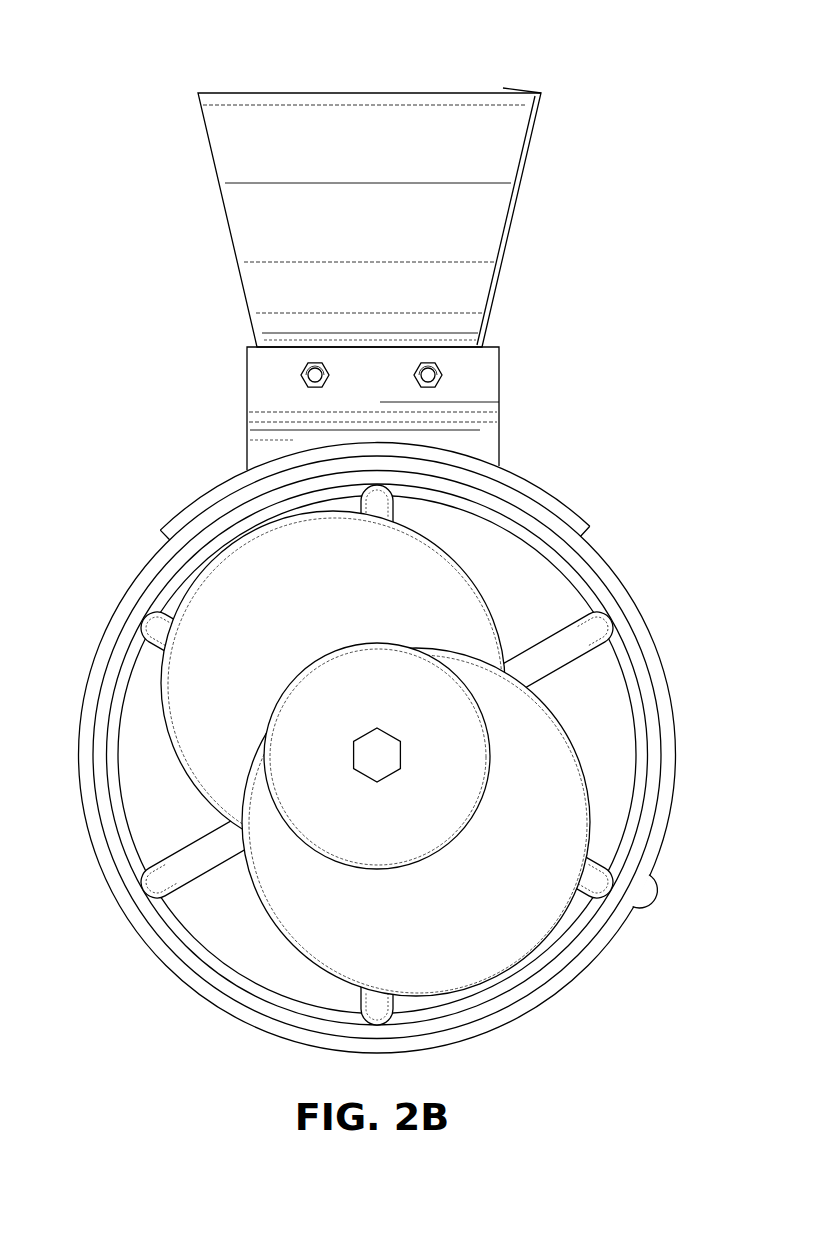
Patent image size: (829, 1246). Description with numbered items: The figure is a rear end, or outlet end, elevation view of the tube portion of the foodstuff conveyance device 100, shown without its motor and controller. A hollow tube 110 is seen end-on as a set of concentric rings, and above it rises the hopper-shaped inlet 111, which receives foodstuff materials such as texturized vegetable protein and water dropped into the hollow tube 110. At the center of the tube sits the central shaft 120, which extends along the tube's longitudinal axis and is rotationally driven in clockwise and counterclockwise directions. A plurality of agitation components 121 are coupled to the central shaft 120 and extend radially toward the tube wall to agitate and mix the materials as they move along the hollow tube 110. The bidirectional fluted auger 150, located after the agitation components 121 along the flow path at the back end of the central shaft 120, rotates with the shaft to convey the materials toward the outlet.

The foodstuff conveyance device 100 is at (100, 110).
The inlet 111 is at (399, 91).
The hollow tube 110 is at (162, 560).
The agitation components 121 is at (597, 628).
The bidirectional fluted auger 150 is at (408, 687).
The central shaft 120 is at (372, 752).